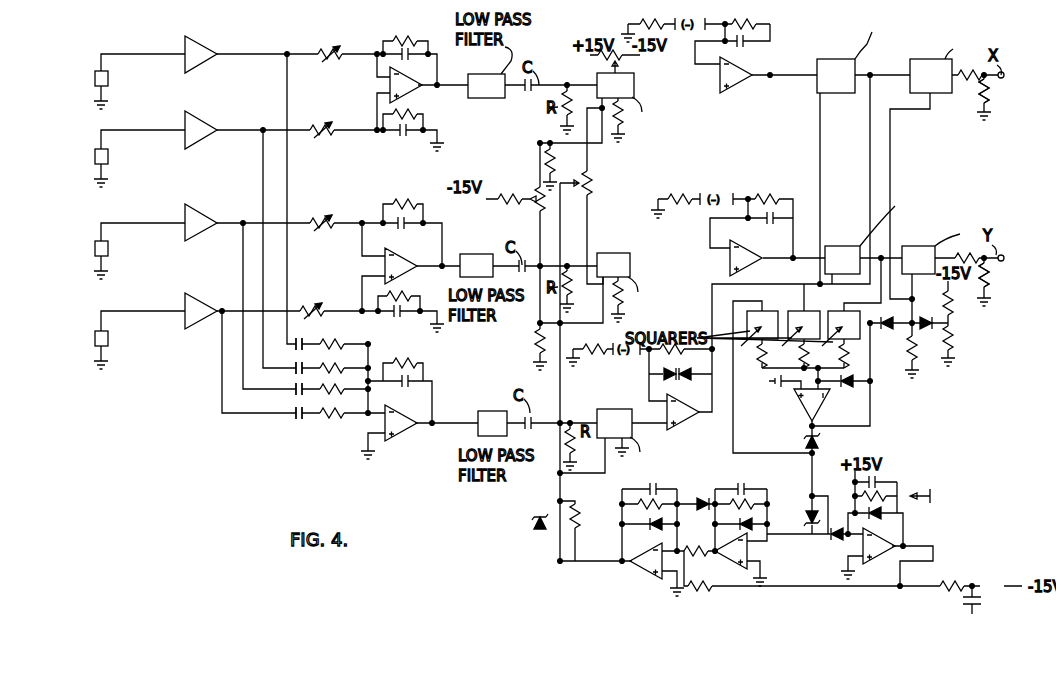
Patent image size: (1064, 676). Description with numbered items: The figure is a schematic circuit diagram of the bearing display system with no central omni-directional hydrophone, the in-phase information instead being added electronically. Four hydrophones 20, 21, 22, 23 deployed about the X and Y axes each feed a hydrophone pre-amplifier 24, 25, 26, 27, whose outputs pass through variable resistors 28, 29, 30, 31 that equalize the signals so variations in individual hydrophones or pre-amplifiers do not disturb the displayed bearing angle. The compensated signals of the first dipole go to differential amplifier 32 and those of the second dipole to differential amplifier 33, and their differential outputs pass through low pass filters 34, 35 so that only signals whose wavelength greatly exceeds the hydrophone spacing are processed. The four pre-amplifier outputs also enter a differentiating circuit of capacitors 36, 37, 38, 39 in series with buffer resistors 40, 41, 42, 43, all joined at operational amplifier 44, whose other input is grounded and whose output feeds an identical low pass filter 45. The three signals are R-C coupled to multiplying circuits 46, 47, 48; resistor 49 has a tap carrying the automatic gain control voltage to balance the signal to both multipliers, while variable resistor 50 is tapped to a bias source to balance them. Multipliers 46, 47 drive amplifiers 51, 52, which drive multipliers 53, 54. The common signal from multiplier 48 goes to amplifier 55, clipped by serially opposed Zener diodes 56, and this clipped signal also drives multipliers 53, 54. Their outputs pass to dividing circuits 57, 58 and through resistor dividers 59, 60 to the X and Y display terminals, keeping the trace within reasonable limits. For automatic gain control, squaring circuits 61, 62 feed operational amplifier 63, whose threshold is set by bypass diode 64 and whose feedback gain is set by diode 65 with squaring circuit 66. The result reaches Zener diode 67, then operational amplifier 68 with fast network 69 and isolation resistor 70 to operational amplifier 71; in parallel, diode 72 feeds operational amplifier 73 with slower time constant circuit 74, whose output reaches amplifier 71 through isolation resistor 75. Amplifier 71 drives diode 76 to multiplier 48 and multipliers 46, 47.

The hydrophone 20 is at (95, 77).
The hydrophone 21 is at (95, 156).
The hydrophone 22 is at (95, 248).
The hydrophone 23 is at (95, 343).
The hydrophone pre-amplifier 24 is at (193, 44).
The hydrophone pre-amplifier 25 is at (200, 126).
The hydrophone pre-amplifier 26 is at (202, 216).
The hydrophone pre-amplifier 27 is at (200, 306).
The variable resistor 28 is at (328, 52).
The variable resistor 29 is at (321, 126).
The variable resistor 30 is at (320, 215).
The variable resistor 31 is at (311, 304).
The differential amplifier 32 is at (418, 75).
The differential amplifier 33 is at (412, 256).
The low pass filter 34 is at (485, 73).
The low pass filter 35 is at (488, 253).
The capacitor 36 is at (295, 341).
The capacitor 37 is at (295, 366).
The capacitor 38 is at (295, 387).
The capacitor 39 is at (295, 411).
The buffer resistor 40 is at (345, 348).
The buffer resistor 41 is at (330, 367).
The buffer resistor 42 is at (330, 388).
The buffer resistor 43 is at (330, 412).
The operational amplifier 44 is at (420, 411).
The low pass filter 45 is at (484, 412).
The multiplying circuit 46 is at (597, 78).
The multiplying circuit 47 is at (627, 246).
The multiplying circuit 48 is at (605, 408).
The resistor 49 is at (592, 182).
The variable resistor 50 is at (535, 190).
The amplifier 51 is at (735, 92).
The amplifier 52 is at (755, 250).
The multiplier 53 is at (845, 58).
The multiplier 54 is at (845, 238).
The amplifier 55 is at (685, 422).
The Zener diodes 56 is at (685, 378).
The dividing circuit 57 is at (928, 58).
The dividing circuit 58 is at (935, 240).
The resistor divider 59 is at (975, 100).
The resistor divider 60 is at (984, 290).
The squaring circuit 61 is at (838, 339).
The squaring circuit 62 is at (812, 316).
The operational amplifier 63 is at (797, 400).
The bypass diode 64 is at (840, 388).
The diode 65 is at (818, 444).
The squaring circuit 66 is at (770, 316).
The Zener diode 67 is at (806, 515).
The operational amplifier 68 is at (747, 552).
The capacitor, resistor, and diode network 69 is at (692, 506).
The isolation resistor 70 is at (705, 550).
The operational amplifier 71 is at (645, 572).
The diode 72 is at (835, 542).
The operational amplifier 73 is at (887, 560).
The slower time constant circuit 74 is at (935, 556).
The isolation resistor 75 is at (714, 584).
The diode 76 is at (538, 523).